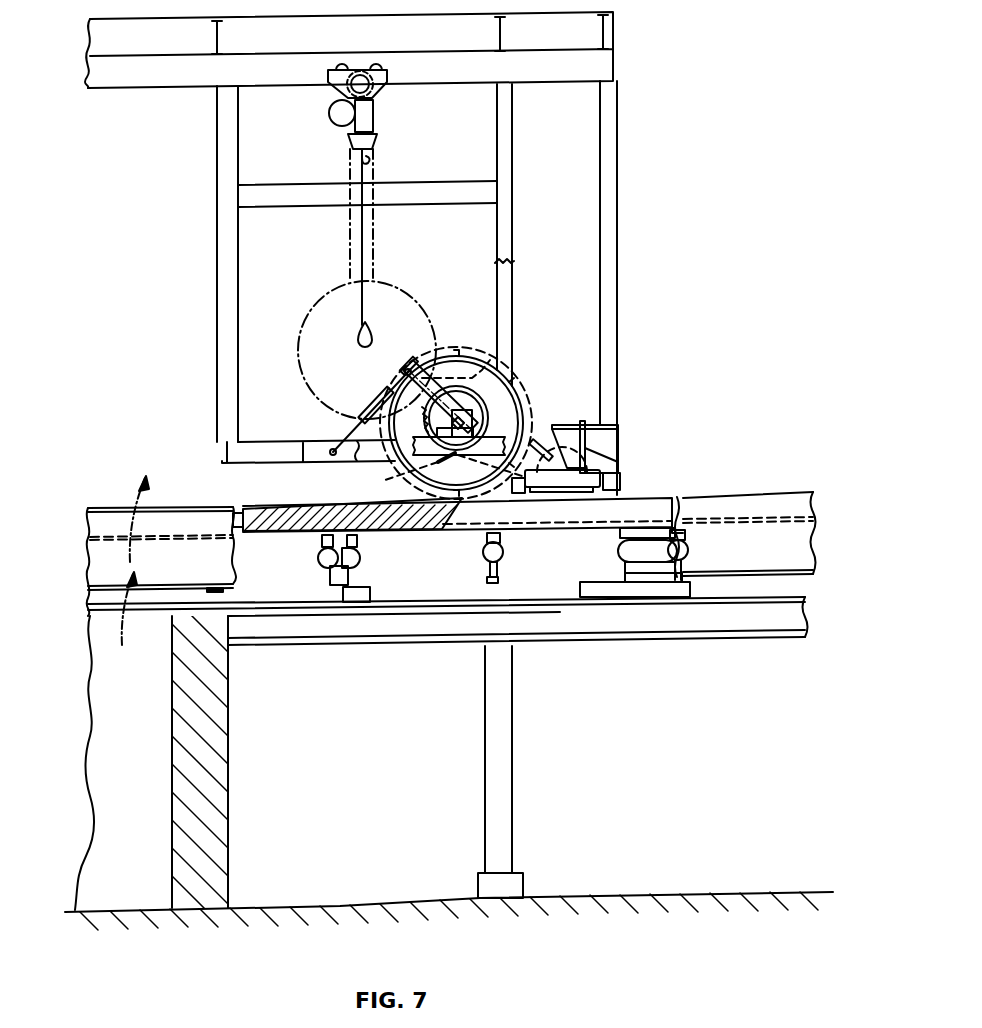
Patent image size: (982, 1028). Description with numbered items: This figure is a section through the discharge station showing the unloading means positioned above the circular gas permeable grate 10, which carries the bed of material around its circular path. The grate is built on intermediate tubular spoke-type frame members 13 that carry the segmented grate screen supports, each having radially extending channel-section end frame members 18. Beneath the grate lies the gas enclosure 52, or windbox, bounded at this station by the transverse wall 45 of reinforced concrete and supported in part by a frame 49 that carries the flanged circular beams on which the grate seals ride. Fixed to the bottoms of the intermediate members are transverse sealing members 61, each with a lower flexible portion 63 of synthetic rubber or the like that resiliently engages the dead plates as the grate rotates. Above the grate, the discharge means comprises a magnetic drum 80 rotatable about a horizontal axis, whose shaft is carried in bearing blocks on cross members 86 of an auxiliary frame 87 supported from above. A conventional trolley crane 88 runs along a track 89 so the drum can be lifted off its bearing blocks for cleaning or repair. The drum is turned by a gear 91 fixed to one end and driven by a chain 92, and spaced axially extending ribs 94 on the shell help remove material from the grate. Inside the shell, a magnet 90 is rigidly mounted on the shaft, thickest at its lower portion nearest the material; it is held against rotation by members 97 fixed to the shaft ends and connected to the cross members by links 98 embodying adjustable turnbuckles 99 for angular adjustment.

The gas permeable grate 10 is at (640, 506).
The auxiliary spoke-type frame member 13 is at (352, 556).
The end frame member 18 is at (322, 540).
The transverse wall 45 is at (228, 785).
The frame 49 is at (513, 757).
The gas enclosure 52 is at (102, 750).
The transverse sealing member 61 is at (330, 574).
The lower flexible portion 63 is at (336, 588).
The magnetic drum 80 is at (512, 362).
The cross member 86 is at (315, 447).
The auxiliary frame 87 is at (612, 198).
The trolley crane 88 is at (373, 118).
The track 89 is at (570, 55).
The magnet 90 is at (465, 367).
The gear 91 is at (486, 412).
The chain 92 is at (438, 462).
The rib 94 is at (455, 350).
The member 97 is at (418, 365).
The link 98 is at (347, 427).
The adjustable turnbuckle 99 is at (370, 404).